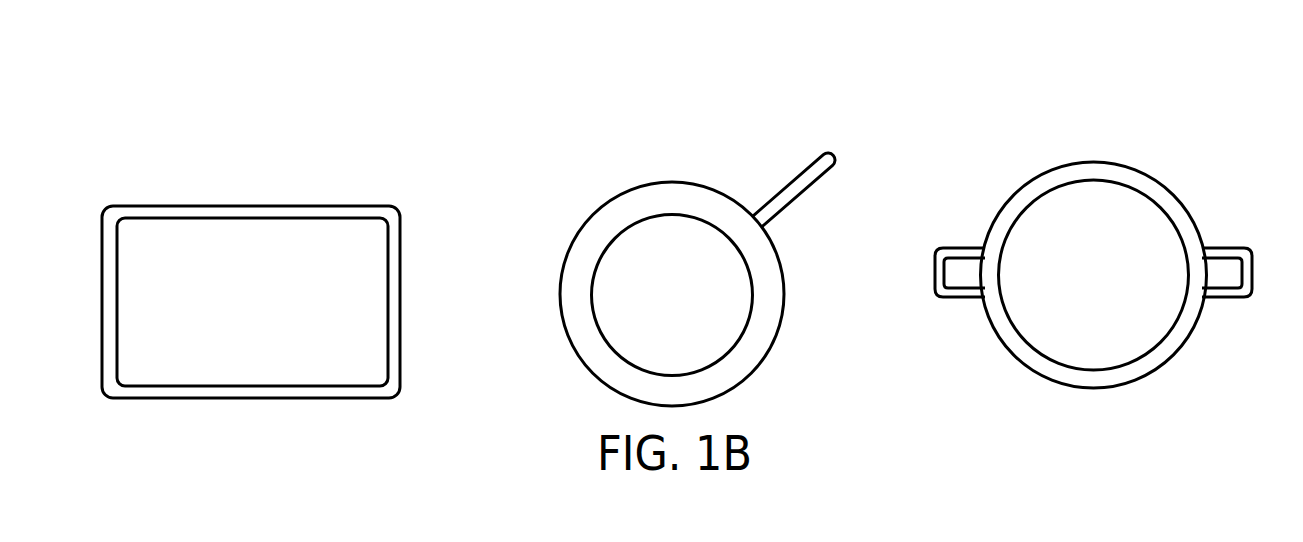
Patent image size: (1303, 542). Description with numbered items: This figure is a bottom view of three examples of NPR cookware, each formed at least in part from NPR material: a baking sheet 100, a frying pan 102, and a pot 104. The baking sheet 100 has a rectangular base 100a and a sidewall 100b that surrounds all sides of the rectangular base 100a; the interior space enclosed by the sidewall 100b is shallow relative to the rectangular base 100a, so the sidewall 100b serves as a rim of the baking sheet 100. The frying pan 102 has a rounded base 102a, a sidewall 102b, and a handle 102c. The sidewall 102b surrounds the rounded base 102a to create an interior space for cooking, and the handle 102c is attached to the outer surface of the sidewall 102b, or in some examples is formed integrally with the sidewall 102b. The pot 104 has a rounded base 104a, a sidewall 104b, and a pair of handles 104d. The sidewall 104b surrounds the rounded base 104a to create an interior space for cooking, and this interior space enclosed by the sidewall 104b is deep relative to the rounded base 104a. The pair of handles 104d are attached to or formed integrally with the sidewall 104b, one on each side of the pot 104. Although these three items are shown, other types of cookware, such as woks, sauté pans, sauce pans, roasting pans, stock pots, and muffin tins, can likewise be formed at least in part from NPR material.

The baking sheet 100 is at (182, 80).
The rectangular base 100a is at (227, 240).
The sidewall 100b is at (397, 242).
The frying pan 102 is at (610, 80).
The rounded base 102a is at (630, 273).
The sidewall 102b is at (668, 198).
The handle 102c is at (797, 182).
The pot 104 is at (1023, 80).
The rounded base 104a is at (1055, 315).
The sidewall 104b is at (1178, 347).
The pair of handles 104d is at (1247, 247).